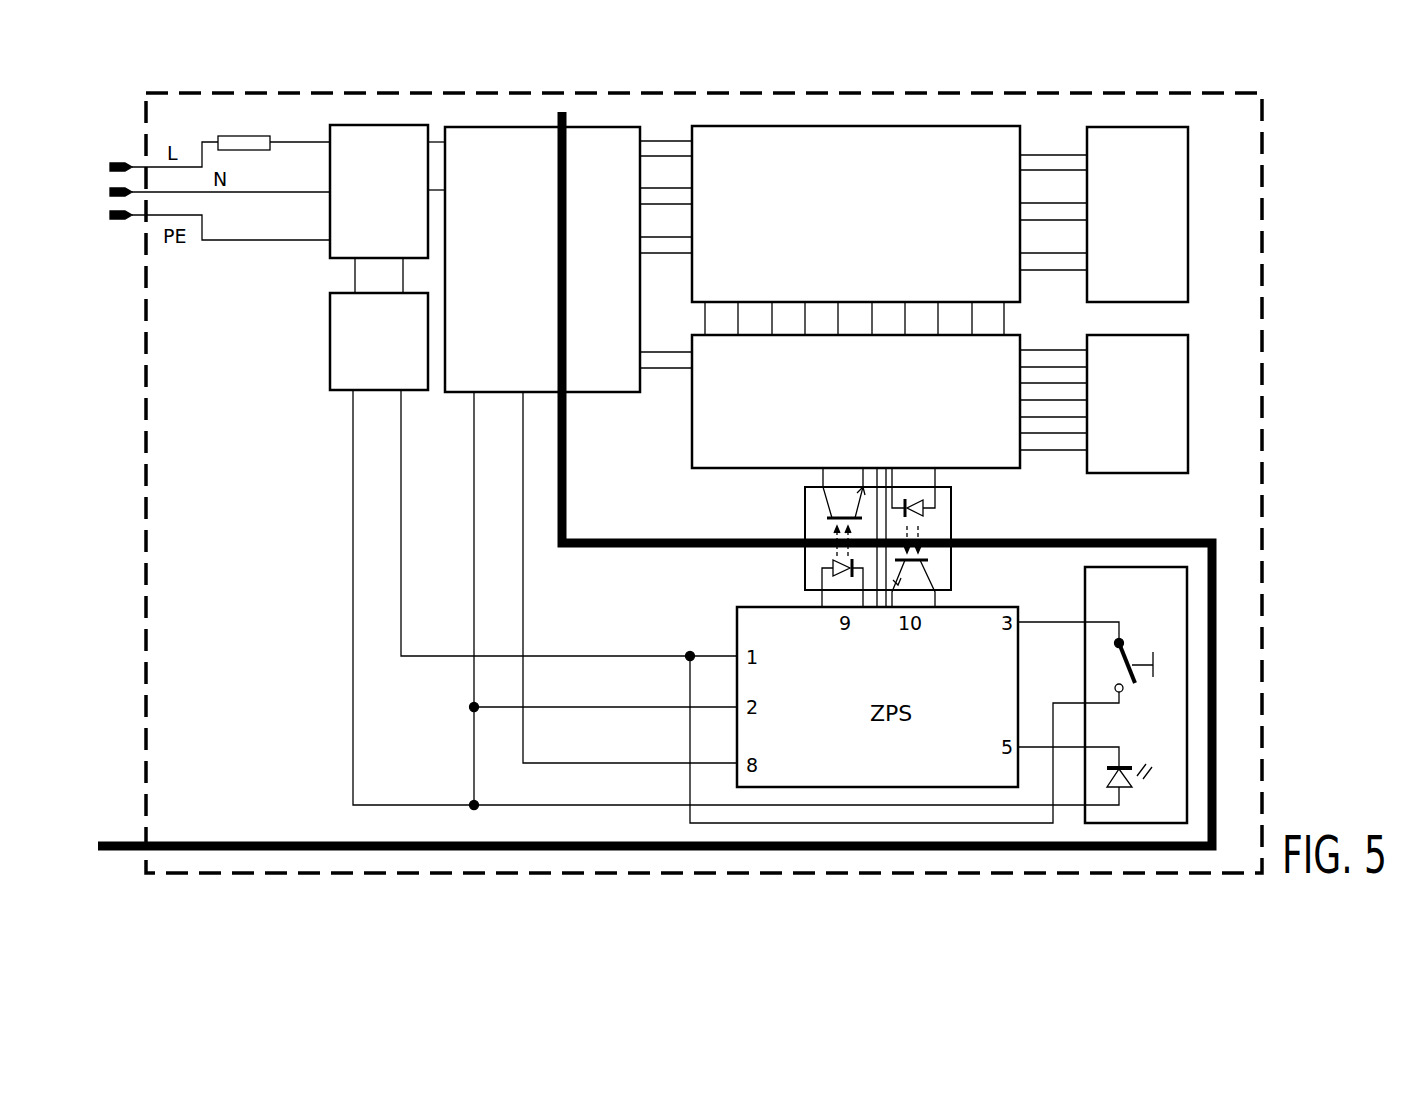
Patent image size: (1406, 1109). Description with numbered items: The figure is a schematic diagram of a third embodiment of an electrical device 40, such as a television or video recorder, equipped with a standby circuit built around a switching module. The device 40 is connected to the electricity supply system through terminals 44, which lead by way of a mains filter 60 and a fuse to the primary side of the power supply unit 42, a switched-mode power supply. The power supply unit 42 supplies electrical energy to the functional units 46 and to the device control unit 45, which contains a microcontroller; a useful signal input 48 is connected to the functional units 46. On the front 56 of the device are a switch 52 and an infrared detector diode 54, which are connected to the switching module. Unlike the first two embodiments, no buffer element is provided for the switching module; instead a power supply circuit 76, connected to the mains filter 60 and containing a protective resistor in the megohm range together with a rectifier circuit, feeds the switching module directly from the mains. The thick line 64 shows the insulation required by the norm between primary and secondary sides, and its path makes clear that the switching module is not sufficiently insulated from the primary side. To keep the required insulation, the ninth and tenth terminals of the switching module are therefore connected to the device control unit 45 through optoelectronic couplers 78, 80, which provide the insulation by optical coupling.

The electrical device 40 is at (1263, 152).
The power supply unit 42 is at (525, 257).
The terminals 44 is at (110, 192).
The device control unit 45 is at (868, 404).
The functional units 46 is at (868, 216).
The useful signal input 48 is at (1150, 224).
The switch 52 is at (1138, 658).
The infrared detector diode 54 is at (1130, 784).
The front 56 is at (1150, 421).
The mains filter 60 is at (392, 195).
The line showing the insulation 64 is at (566, 112).
The power supply circuit 76 is at (392, 349).
The optoelectronic coupler 78 is at (805, 508).
The optoelectronic coupler 80 is at (953, 508).